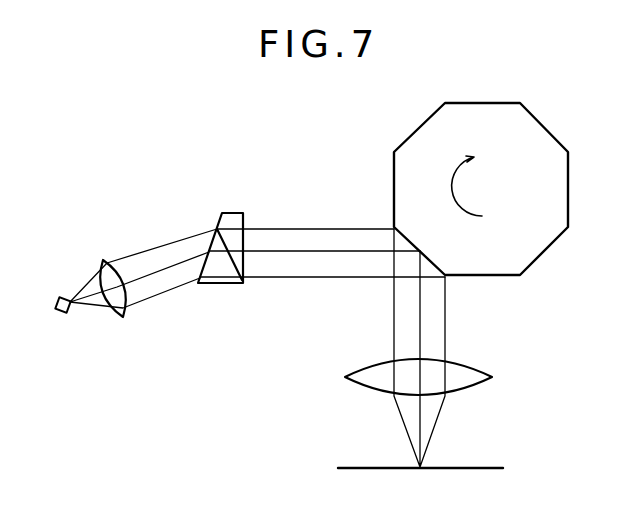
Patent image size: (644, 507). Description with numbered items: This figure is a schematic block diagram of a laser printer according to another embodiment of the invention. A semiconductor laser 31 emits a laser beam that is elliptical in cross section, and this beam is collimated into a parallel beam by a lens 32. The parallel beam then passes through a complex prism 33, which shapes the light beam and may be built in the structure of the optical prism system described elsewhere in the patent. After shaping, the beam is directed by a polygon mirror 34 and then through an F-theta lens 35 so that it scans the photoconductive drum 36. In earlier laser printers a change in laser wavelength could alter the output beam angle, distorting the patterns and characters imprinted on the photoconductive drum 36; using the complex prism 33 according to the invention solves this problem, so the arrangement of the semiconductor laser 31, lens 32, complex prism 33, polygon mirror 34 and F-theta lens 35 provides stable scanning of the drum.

The semiconductor laser 31 is at (58, 296).
The lens 32 is at (104, 259).
The complex prism 33 is at (233, 212).
The polygon mirror 34 is at (555, 138).
The F-theta lens 35 is at (483, 370).
The photoconductive drum 36 is at (490, 467).